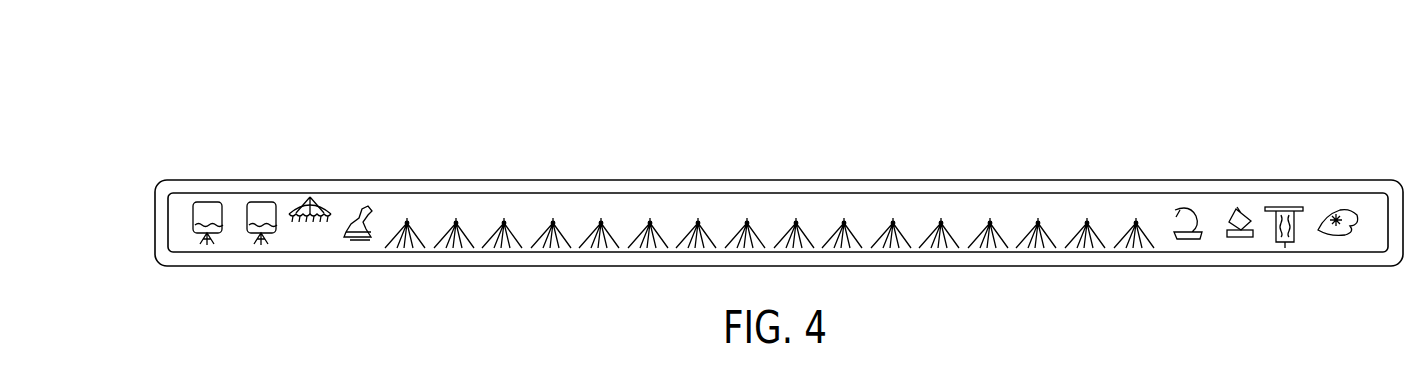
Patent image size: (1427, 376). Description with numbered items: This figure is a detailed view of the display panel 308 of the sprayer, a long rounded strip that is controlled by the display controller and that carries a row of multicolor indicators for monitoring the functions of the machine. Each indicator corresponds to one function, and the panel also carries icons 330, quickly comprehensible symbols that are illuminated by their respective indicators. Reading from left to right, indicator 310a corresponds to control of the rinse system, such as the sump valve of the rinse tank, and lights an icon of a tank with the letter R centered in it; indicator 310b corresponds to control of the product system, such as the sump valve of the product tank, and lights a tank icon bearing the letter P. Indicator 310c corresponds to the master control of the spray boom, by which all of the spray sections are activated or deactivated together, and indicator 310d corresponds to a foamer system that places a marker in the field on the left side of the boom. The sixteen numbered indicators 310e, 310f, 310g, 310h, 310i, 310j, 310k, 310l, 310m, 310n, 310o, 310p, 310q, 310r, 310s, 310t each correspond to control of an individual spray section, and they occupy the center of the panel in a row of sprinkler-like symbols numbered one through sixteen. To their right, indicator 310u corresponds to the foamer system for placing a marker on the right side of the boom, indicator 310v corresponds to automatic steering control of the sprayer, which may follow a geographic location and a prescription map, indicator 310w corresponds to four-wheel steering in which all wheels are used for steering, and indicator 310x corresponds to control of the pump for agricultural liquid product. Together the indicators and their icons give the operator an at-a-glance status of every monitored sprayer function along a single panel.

The display panel 308 is at (1237, 60).
The icons 330 is at (134, 220).
The indicator 310a is at (208, 246).
The indicator 310b is at (258, 246).
The indicator 310c is at (314, 205).
The indicator 310d is at (363, 240).
The indicator 310e is at (397, 218).
The indicator 310f is at (442, 218).
The indicator 310g is at (494, 218).
The indicator 310h is at (539, 218).
The indicator 310i is at (591, 218).
The indicator 310j is at (637, 218).
The indicator 310k is at (688, 218).
The indicator 310l is at (733, 218).
The indicator 310m is at (785, 218).
The indicator 310n is at (824, 218).
The indicator 310o is at (878, 218).
The indicator 310p is at (922, 218).
The indicator 310q is at (978, 218).
The indicator 310r is at (1022, 218).
The indicator 310s is at (1076, 218).
The indicator 310t is at (1122, 218).
The indicator 310u is at (1190, 242).
The indicator 310v is at (1247, 212).
The indicator 310w is at (1288, 244).
The indicator 310x is at (1340, 212).